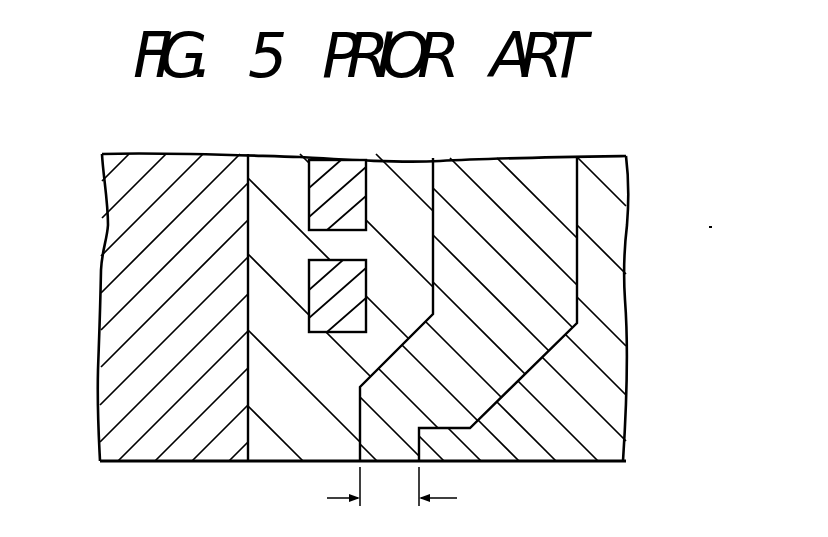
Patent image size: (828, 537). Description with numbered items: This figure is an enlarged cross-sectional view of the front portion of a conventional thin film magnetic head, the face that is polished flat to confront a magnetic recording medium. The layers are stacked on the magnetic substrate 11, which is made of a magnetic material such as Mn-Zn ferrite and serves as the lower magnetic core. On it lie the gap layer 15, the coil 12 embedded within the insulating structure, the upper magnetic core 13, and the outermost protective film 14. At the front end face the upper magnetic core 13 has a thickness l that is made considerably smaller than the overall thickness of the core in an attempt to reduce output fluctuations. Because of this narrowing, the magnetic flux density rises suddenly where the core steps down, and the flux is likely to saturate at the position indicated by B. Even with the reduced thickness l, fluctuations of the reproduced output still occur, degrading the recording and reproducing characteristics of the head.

The magnetic substrate 11 is at (123, 400).
The coil 12 is at (341, 172).
The upper magnetic core 13 is at (505, 190).
The protective film 14 is at (588, 395).
The gap layer 15 is at (307, 428).
The position of magnetic flux saturation B is at (455, 408).
The thickness of the upper magnetic core at the front end face l is at (392, 492).